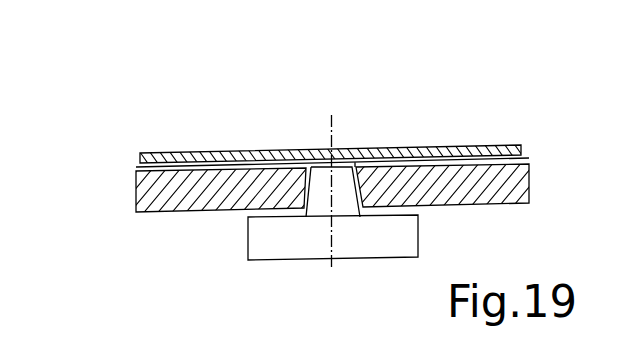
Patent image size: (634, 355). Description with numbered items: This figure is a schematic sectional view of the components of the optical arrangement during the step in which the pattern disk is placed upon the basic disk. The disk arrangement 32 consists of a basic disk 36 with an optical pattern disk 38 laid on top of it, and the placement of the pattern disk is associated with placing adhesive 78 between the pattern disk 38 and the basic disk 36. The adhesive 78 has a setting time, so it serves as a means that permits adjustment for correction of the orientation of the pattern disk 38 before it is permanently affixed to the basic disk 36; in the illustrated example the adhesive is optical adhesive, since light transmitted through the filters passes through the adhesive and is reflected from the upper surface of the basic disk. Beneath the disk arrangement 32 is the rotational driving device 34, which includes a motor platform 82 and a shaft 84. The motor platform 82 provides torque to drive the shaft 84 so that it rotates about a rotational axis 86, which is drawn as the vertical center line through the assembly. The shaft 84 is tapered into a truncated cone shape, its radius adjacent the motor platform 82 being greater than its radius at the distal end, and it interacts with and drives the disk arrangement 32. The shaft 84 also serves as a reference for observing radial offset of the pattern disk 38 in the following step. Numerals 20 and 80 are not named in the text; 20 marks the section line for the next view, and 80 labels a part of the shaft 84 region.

The section line for view of FIG. 20 is at (95, 42).
The disk arrangement 32 is at (355, 170).
The rotational driving device 34 is at (275, 215).
The basic disk 36 is at (502, 190).
The optical pattern disk 38 is at (411, 148).
The adhesive 78 is at (492, 158).
The pin 80 is at (350, 195).
The motor platform 82 is at (268, 250).
The shaft 84 is at (316, 198).
The rotational axis 86 is at (333, 265).